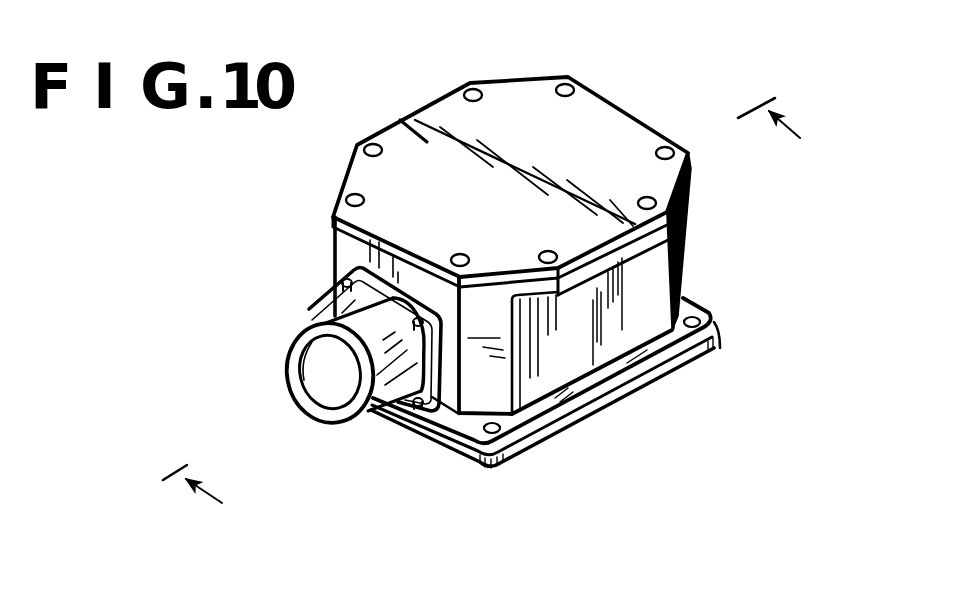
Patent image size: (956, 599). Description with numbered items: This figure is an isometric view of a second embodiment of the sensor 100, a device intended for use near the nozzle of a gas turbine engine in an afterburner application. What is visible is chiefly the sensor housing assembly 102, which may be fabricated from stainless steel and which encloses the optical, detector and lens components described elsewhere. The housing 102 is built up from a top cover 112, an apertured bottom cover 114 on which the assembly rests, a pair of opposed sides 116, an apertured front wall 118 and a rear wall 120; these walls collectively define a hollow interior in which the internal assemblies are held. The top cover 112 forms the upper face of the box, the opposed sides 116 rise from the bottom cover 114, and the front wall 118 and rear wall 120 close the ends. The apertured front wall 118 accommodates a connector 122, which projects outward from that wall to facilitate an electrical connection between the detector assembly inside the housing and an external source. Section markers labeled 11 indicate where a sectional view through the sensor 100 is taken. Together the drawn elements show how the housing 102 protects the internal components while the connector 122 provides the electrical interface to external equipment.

The sensor 100 is at (485, 264).
The sensor housing assembly 102 is at (626, 416).
The top cover 112 is at (512, 123).
The apertured bottom cover 114 is at (440, 442).
The opposed sides 116 is at (643, 284).
The apertured front wall 118 is at (360, 250).
The rear wall 120 is at (690, 191).
The connector 122 is at (317, 376).
The section line 11- 11 is at (509, 320).